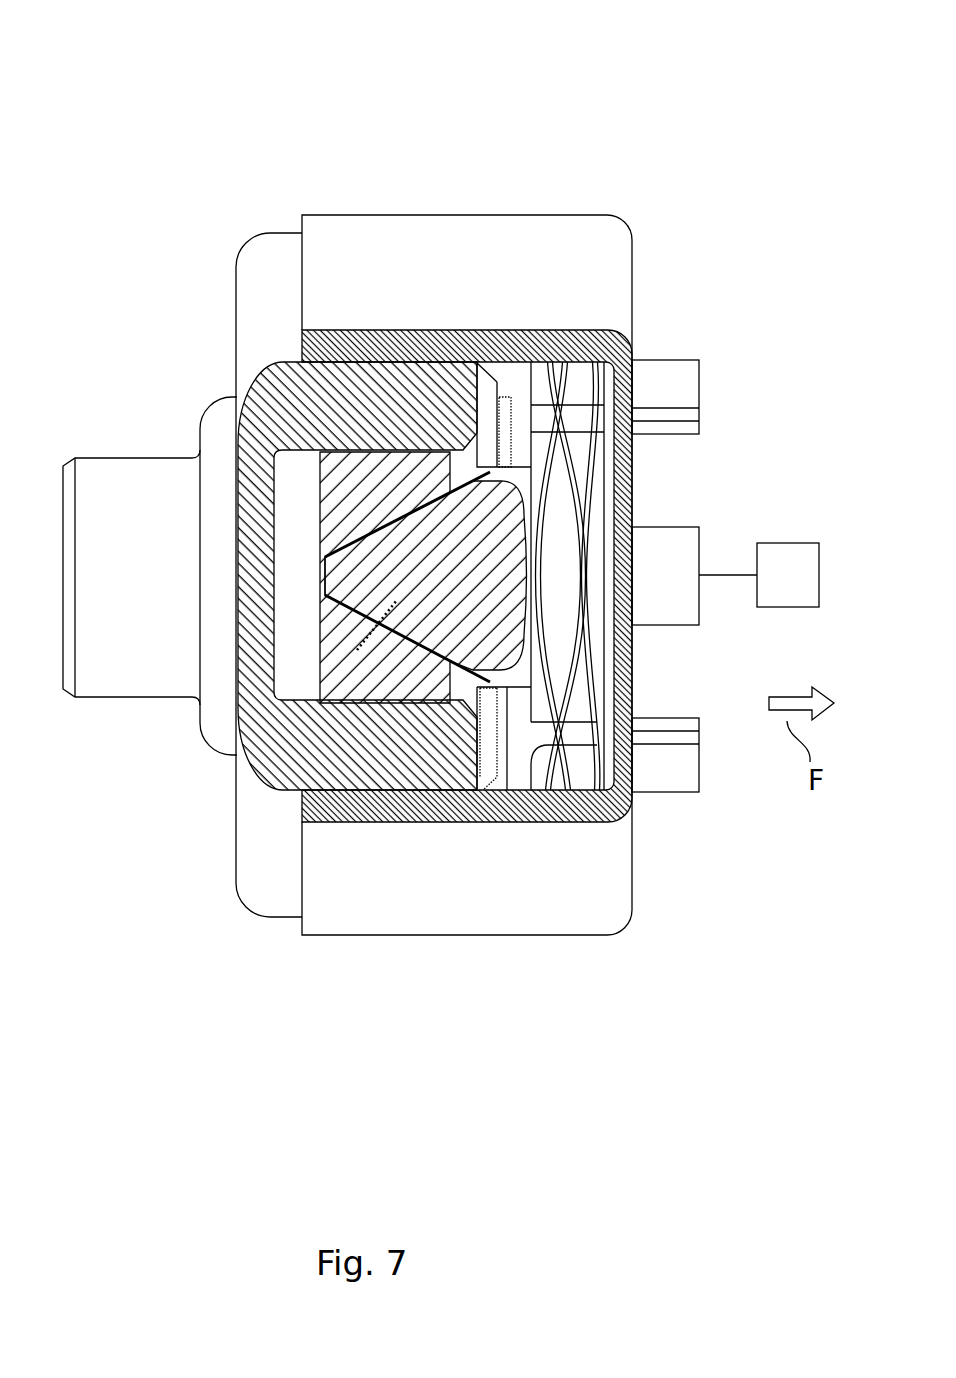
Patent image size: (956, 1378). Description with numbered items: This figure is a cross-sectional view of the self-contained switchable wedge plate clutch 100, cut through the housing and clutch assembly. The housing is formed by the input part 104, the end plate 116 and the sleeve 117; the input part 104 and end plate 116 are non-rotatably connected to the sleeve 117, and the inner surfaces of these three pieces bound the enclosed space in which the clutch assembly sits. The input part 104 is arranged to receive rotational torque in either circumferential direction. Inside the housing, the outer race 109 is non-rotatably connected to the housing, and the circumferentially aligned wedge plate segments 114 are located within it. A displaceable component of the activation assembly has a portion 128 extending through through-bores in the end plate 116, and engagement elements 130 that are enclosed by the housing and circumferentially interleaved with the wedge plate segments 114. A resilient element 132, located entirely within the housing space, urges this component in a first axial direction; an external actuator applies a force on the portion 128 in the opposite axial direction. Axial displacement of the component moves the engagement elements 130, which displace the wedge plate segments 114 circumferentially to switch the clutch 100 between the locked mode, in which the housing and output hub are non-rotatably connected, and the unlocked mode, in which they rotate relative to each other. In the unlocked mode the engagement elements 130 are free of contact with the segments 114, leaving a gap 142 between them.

The switchable wedge plate clutch 100 is at (614, 68).
The input part 104 is at (125, 454).
The outer race 109 is at (390, 452).
The circumferentially aligned wedge plate segments 114 is at (372, 483).
The end plate 116 is at (617, 470).
The sleeve 117 is at (470, 215).
The portion 128 is at (646, 370).
The engagement elements 130 is at (437, 530).
The resilient element 132 is at (590, 387).
The gap 142 is at (360, 648).